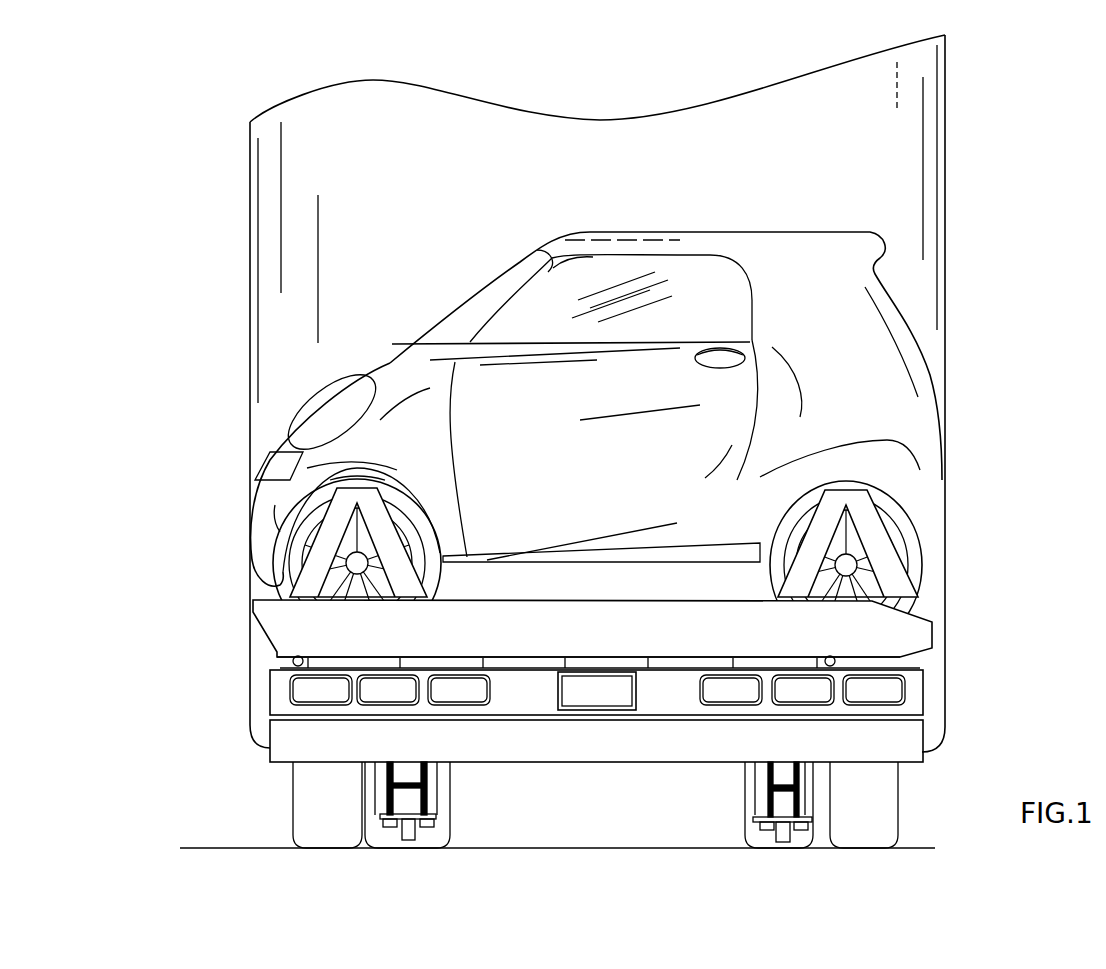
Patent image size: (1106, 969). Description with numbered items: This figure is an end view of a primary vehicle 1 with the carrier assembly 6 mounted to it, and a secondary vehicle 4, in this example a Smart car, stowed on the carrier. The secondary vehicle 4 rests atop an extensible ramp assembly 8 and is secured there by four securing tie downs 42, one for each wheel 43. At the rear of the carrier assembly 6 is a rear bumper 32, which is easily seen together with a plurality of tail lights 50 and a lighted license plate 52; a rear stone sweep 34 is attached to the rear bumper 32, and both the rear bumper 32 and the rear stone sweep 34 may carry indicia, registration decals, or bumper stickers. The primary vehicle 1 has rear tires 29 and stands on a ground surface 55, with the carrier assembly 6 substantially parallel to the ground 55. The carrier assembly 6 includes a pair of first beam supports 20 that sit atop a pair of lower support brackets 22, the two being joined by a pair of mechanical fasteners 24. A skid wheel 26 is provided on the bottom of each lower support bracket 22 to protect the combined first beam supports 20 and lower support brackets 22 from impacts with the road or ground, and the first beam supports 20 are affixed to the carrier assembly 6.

The primary vehicle 1 is at (945, 153).
The secondary vehicle 4 is at (631, 440).
The carrier assembly 6 is at (950, 638).
The extensible ramp assembly 8 is at (262, 632).
The first beam supports 20 is at (427, 773).
The lower support brackets 22 is at (427, 805).
The mechanical fasteners 24 is at (385, 827).
The skid wheel 26 is at (408, 840).
The rear tires 29 is at (292, 810).
The rear bumper 32 is at (268, 698).
The rear stone sweep 34 is at (268, 757).
The securing tie downs 42 is at (300, 557).
The wheel 43 is at (430, 570).
The tail lights 50 is at (290, 696).
The lighted license plate 52 is at (633, 708).
The ground surface 55 is at (530, 848).